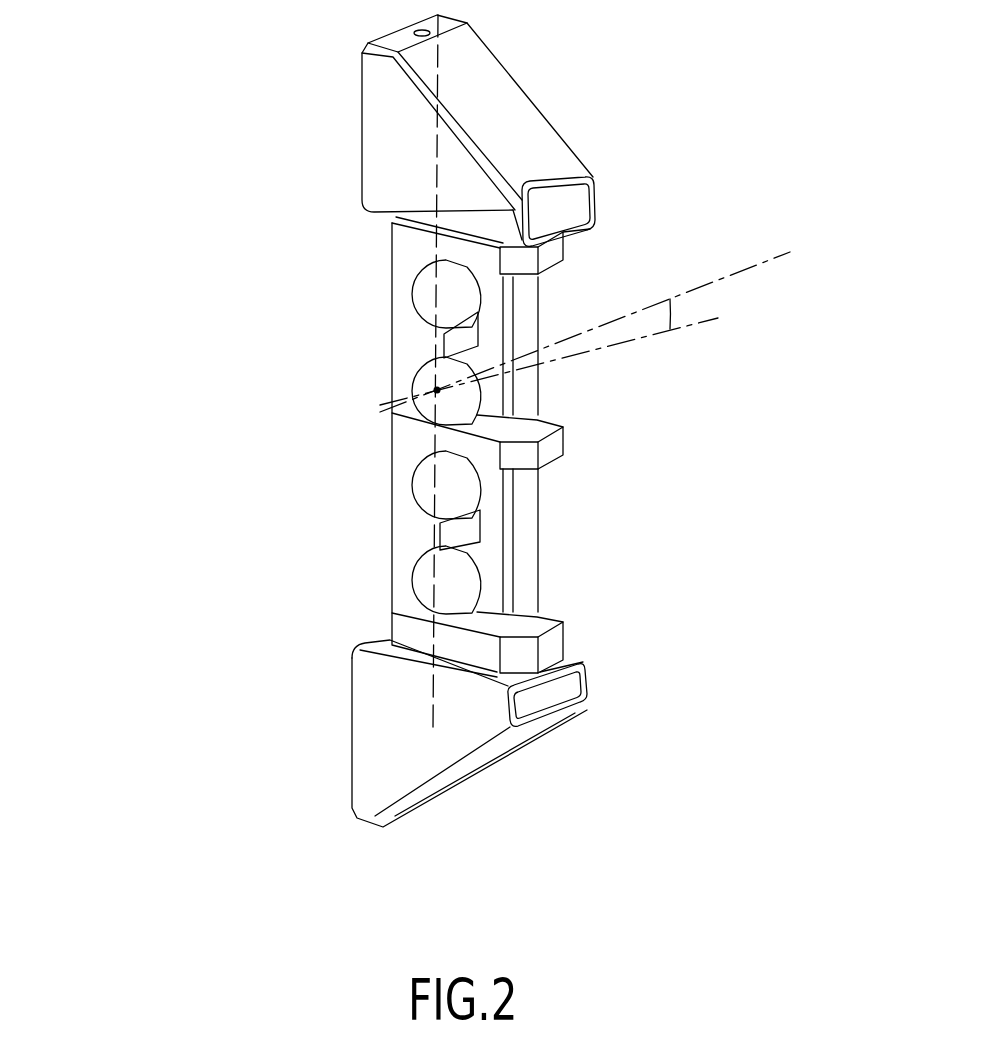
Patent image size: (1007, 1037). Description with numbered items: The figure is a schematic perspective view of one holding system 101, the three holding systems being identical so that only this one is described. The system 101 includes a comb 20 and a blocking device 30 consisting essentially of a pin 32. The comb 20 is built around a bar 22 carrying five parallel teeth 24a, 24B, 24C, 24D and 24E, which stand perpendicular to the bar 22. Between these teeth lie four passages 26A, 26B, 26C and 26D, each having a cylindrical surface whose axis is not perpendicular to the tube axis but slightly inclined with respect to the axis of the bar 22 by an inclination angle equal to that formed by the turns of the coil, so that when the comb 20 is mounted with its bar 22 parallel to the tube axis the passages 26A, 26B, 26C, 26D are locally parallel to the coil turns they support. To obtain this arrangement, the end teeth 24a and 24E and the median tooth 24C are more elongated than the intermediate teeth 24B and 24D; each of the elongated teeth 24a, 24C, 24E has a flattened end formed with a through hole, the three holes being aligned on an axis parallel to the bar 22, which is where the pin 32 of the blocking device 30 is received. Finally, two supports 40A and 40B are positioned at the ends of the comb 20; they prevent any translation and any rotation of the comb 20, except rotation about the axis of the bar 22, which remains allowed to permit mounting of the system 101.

The holding system 101 is at (207, 462).
The comb 20 is at (380, 430).
The bar 22 is at (400, 537).
The end tooth 24a is at (548, 645).
The intermediate tooth 24B is at (468, 532).
The median tooth 24C is at (548, 450).
The intermediate tooth 24D is at (526, 320).
The end tooth 24E is at (557, 258).
The passage 26A is at (425, 580).
The passage 26B is at (425, 482).
The passage 26C is at (425, 383).
The passage 26D is at (425, 288).
The blocking device 30 is at (573, 390).
The pin 32 is at (525, 570).
The support 40A is at (493, 762).
The support 40B is at (510, 103).